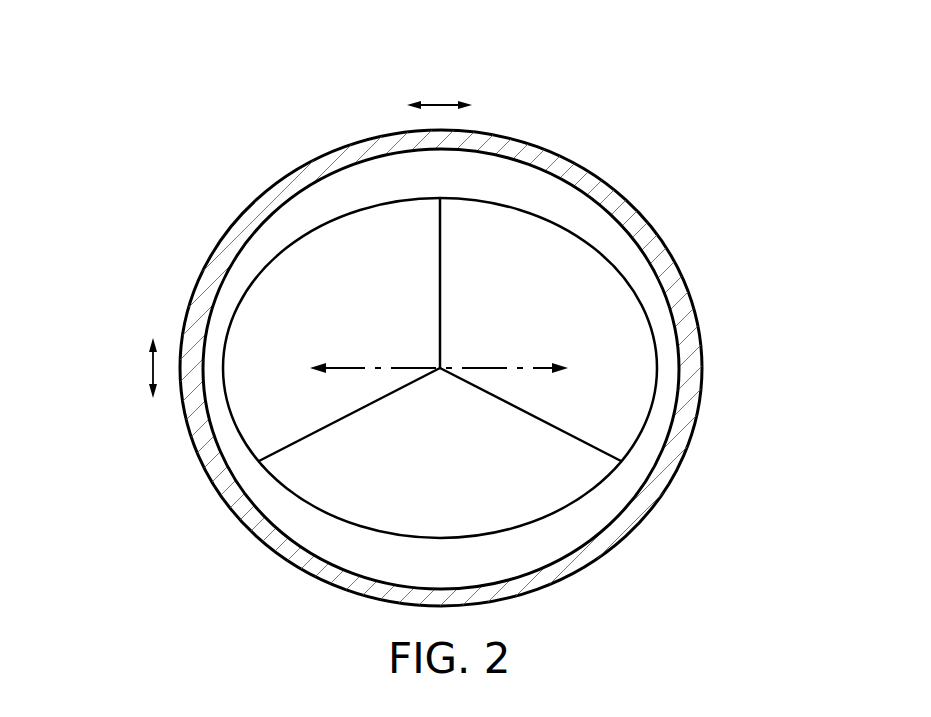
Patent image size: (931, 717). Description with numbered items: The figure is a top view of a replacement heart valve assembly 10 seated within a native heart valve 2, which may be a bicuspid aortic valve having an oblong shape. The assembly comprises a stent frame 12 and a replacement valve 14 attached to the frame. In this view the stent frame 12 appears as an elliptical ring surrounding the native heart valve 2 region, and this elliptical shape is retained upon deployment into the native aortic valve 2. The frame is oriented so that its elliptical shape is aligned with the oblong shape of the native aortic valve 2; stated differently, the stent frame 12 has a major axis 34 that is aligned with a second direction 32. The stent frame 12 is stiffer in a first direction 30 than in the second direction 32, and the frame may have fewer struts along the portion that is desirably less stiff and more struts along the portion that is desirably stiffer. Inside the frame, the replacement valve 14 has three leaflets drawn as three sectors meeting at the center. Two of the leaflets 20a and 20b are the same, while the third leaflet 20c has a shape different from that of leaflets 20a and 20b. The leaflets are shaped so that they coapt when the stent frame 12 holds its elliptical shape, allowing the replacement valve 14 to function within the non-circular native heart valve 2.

The native heart valve 2 is at (615, 545).
The replacement heart valve assembly 10 is at (603, 217).
The stent frame 12 is at (512, 205).
The replacement valve 14 is at (378, 345).
The leaflet 20a is at (412, 256).
The leaflet 20b is at (521, 256).
The leaflet 20c is at (415, 484).
The first direction 30 is at (153, 366).
The second direction 32 is at (442, 105).
The major axis 34 is at (510, 367).